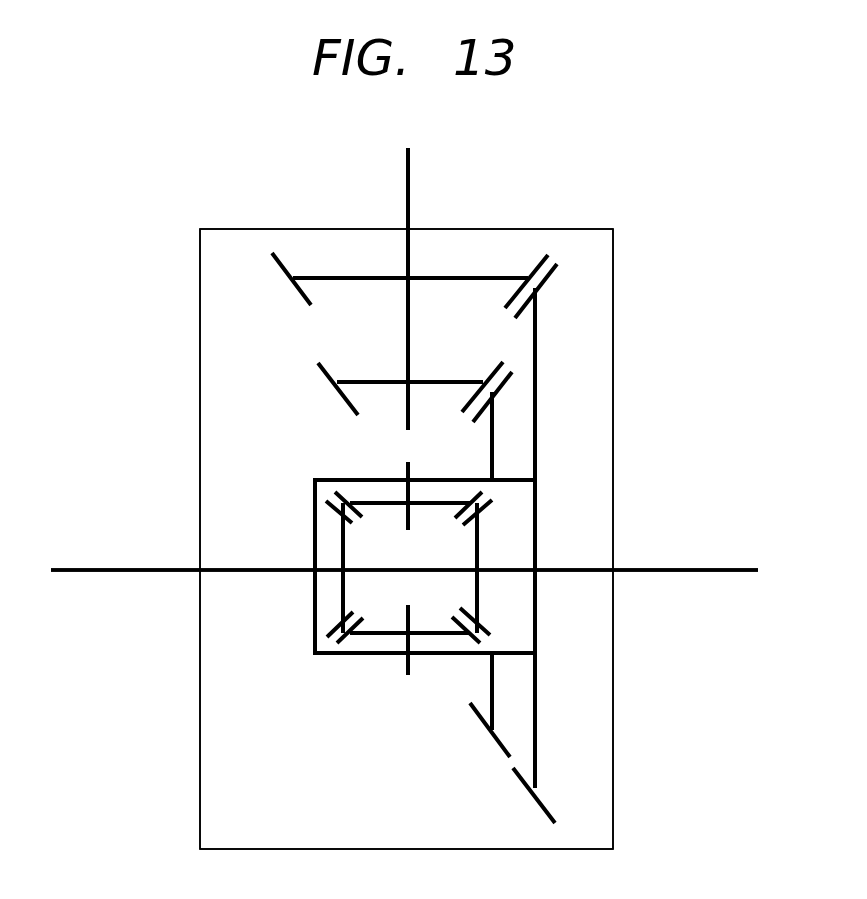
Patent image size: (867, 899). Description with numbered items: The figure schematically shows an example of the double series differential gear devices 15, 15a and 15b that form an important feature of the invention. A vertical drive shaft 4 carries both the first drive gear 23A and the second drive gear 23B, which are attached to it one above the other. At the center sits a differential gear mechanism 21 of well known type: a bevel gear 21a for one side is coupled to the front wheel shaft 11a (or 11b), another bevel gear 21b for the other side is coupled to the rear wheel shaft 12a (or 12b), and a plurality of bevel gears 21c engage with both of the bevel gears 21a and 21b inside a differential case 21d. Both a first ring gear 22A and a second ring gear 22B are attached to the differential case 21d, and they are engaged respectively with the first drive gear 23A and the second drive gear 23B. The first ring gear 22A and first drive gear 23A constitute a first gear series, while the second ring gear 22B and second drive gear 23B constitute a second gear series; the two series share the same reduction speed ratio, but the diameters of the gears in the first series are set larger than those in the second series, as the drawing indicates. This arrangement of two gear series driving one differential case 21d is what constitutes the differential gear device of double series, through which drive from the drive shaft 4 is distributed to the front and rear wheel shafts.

The drive shaft 4 is at (411, 178).
The double series differential gear device 15 is at (538, 229).
The double series differential gear device 15a is at (432, 507).
The double series differential gear device 15b is at (432, 507).
The front wheel shaft 11a is at (674, 570).
The front wheel shaft 11b is at (103, 570).
The rear wheel shaft 12a is at (583, 533).
The rear wheel shaft 12b is at (229, 533).
The differential gear mechanism 21 is at (288, 512).
The bevel gear 21a is at (478, 551).
The bevel gear 21b is at (343, 600).
The bevel gears 21c is at (438, 503).
The differential case 21d is at (368, 653).
The first ring gear 22A is at (537, 316).
The second ring gear 22B is at (494, 448).
The first drive gear 23A is at (369, 278).
The second drive gear 23B is at (378, 382).